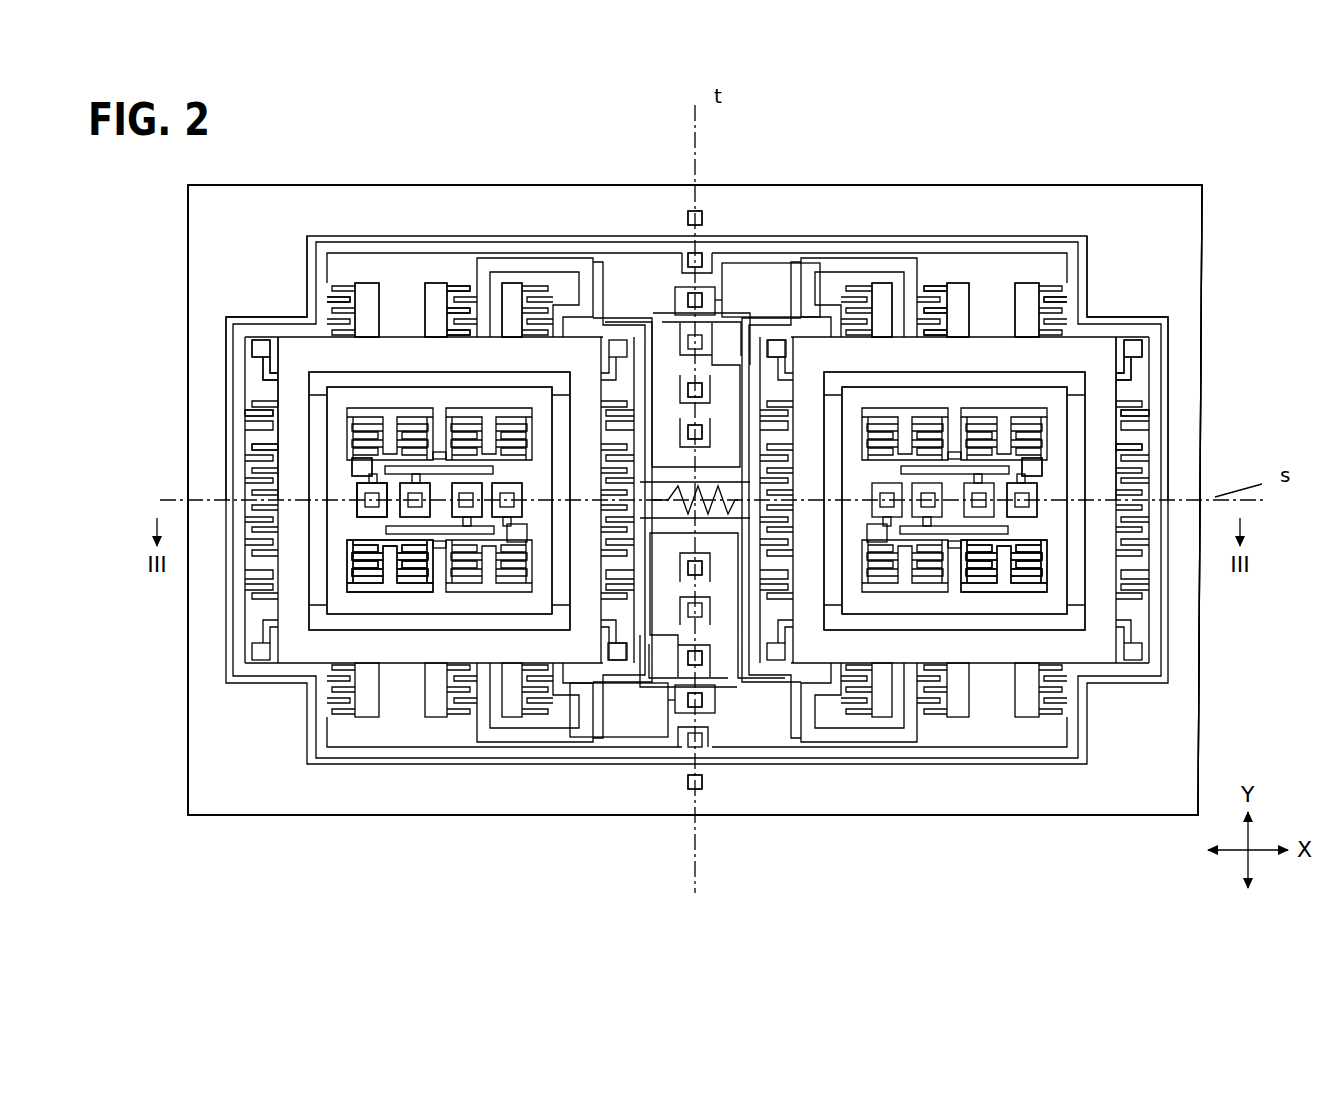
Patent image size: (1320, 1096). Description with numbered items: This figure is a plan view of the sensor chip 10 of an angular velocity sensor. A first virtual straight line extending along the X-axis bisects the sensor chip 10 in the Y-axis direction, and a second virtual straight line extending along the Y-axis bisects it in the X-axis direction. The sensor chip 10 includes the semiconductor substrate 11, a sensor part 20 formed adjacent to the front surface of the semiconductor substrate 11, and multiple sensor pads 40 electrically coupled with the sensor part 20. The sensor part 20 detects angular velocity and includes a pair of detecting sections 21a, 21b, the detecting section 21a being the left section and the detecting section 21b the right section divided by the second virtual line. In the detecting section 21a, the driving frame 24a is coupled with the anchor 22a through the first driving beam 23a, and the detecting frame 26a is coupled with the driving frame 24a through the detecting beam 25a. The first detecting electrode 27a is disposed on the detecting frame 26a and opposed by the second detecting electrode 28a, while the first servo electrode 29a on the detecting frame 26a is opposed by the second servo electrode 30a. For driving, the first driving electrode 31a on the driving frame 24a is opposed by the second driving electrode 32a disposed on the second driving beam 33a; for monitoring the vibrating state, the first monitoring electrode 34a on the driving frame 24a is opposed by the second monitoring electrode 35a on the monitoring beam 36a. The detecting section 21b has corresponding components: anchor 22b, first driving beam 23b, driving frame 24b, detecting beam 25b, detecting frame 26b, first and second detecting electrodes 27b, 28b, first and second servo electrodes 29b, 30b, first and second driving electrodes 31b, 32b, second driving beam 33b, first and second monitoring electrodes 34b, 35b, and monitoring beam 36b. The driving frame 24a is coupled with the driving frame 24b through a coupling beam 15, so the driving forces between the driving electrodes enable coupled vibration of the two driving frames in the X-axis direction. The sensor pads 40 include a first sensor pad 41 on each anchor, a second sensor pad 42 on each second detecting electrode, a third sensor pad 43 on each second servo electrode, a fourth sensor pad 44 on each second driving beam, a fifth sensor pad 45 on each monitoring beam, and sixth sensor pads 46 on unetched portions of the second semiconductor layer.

The sensor chip 10 is at (1213, 124).
The semiconductor substrate 11 is at (1142, 186).
The coupling beam 15 is at (689, 430).
The sensor part 20 is at (1242, 185).
The sensor pads 40 is at (1190, 181).
The detecting section 21a is at (514, 177).
The detecting section 21b is at (834, 177).
The anchor 22a is at (253, 347).
The anchor 22b is at (1142, 347).
The first driving beam 23a is at (263, 365).
The first driving beam 23b is at (1131, 365).
The driving frame 24a is at (277, 395).
The driving frame 24b is at (1117, 395).
The detecting beam 25a is at (318, 393).
The detecting beam 25b is at (1076, 393).
The detecting frame 26a is at (345, 390).
The detecting frame 26b is at (1049, 390).
The first detecting electrode 27a is at (318, 600).
The first detecting electrode 27b is at (1076, 600).
The second detecting electrode 28a is at (362, 582).
The second detecting electrode 28b is at (1032, 582).
The first servo electrode 29a is at (333, 473).
The first servo electrode 29b is at (1061, 473).
The second servo electrode 30a is at (357, 520).
The second servo electrode 30b is at (1037, 520).
The first driving electrode 31a is at (247, 410).
The first driving electrode 31b is at (1147, 410).
The second driving electrode 32a is at (257, 448).
The second driving electrode 32b is at (1137, 448).
The second driving beam 33a is at (300, 313).
The second driving beam 33b is at (1094, 315).
The first monitoring electrode 34a is at (433, 283).
The first monitoring electrode 34b is at (959, 283).
The second monitoring electrode 35a is at (460, 283).
The second monitoring electrode 35b is at (985, 283).
The monitoring beam 36a is at (512, 283).
The monitoring beam 36b is at (882, 283).
The first sensor pad 41 is at (691, 388).
The second sensor pad 42 is at (372, 518).
The third sensor pad 43 is at (415, 518).
The fourth sensor pad 44 is at (700, 297).
The fifth sensor pad 45 is at (705, 262).
The sixth sensor pad 46 is at (694, 212).